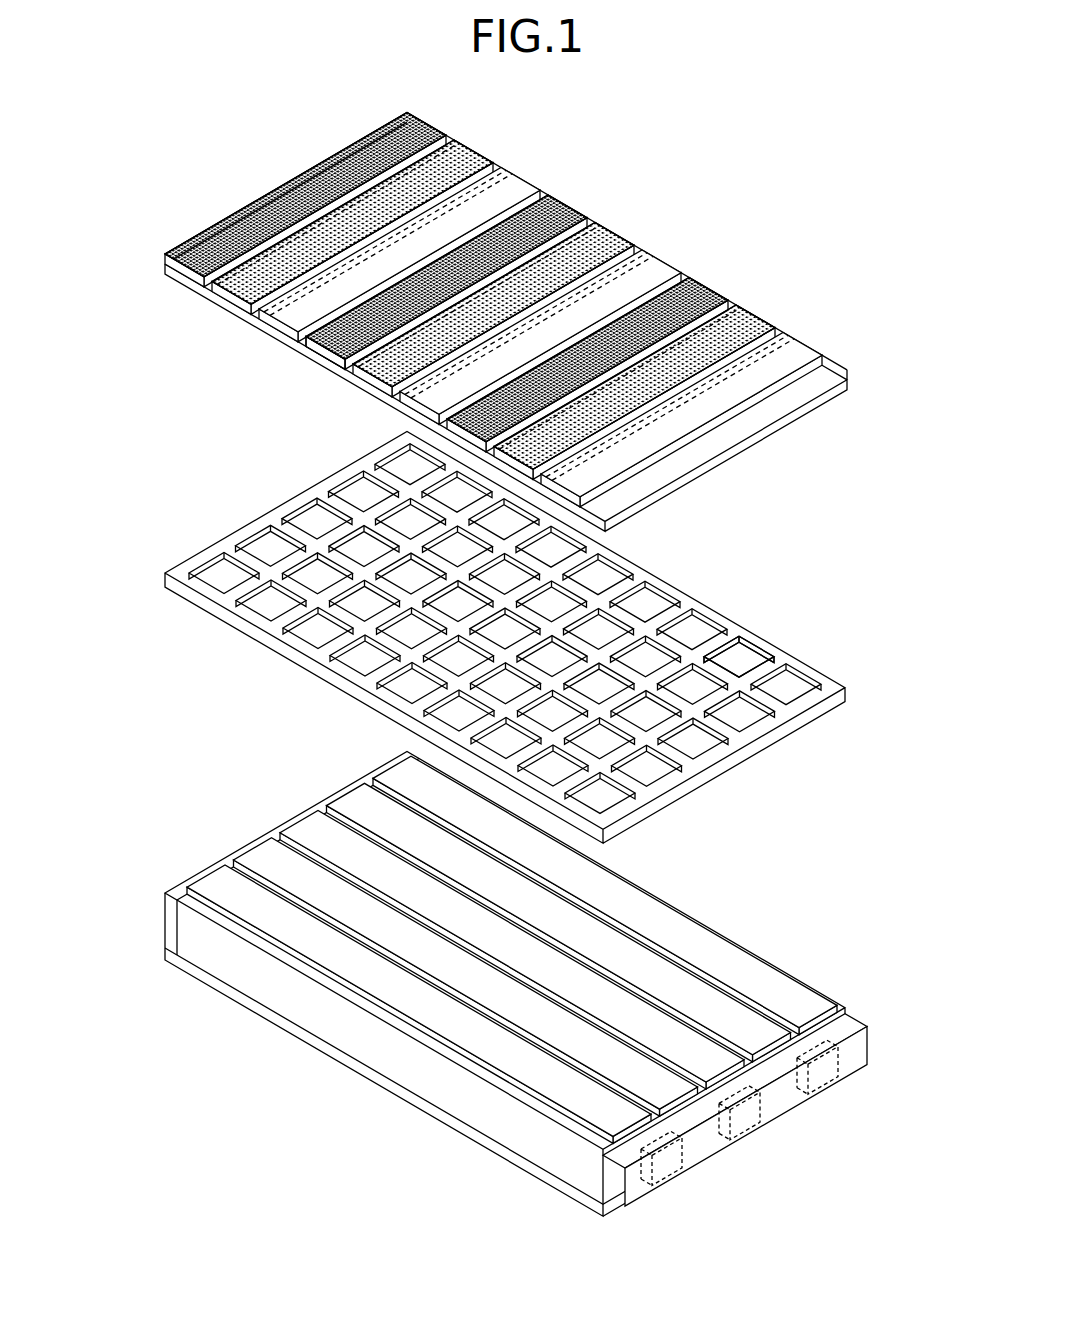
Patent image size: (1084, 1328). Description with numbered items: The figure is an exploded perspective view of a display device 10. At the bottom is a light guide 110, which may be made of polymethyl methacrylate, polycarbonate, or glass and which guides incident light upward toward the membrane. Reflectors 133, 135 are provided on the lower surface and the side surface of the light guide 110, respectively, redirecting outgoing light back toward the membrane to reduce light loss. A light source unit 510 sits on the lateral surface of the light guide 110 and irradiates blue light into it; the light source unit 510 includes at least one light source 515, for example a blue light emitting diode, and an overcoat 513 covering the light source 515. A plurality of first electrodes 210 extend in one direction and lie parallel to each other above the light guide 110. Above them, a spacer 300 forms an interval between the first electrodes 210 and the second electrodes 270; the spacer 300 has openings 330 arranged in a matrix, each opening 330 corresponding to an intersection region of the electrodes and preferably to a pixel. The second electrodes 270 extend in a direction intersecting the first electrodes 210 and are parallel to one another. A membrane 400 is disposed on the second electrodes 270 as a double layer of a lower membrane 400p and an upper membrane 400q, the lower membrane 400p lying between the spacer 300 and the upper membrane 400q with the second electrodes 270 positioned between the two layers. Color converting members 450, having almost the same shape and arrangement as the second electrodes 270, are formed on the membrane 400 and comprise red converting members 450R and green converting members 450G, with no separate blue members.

The display device 10 is at (267, 101).
The light guide 110 is at (503, 992).
The reflector 133 is at (300, 1030).
The reflector 135 is at (172, 914).
The first electrodes 210 is at (680, 943).
The second electrodes 270 is at (337, 352).
The spacer 300 is at (505, 637).
The opening 330 is at (737, 660).
The membrane 400 is at (520, 324).
The lower membrane 400p is at (735, 453).
The upper membrane 400q is at (775, 415).
The color converting members 450 is at (493, 309).
The red converting members 450R is at (573, 209).
The green converting members 450G is at (613, 247).
The light source unit 510 is at (735, 1112).
The overcoat 513 is at (782, 1073).
The light source 515 is at (752, 1122).